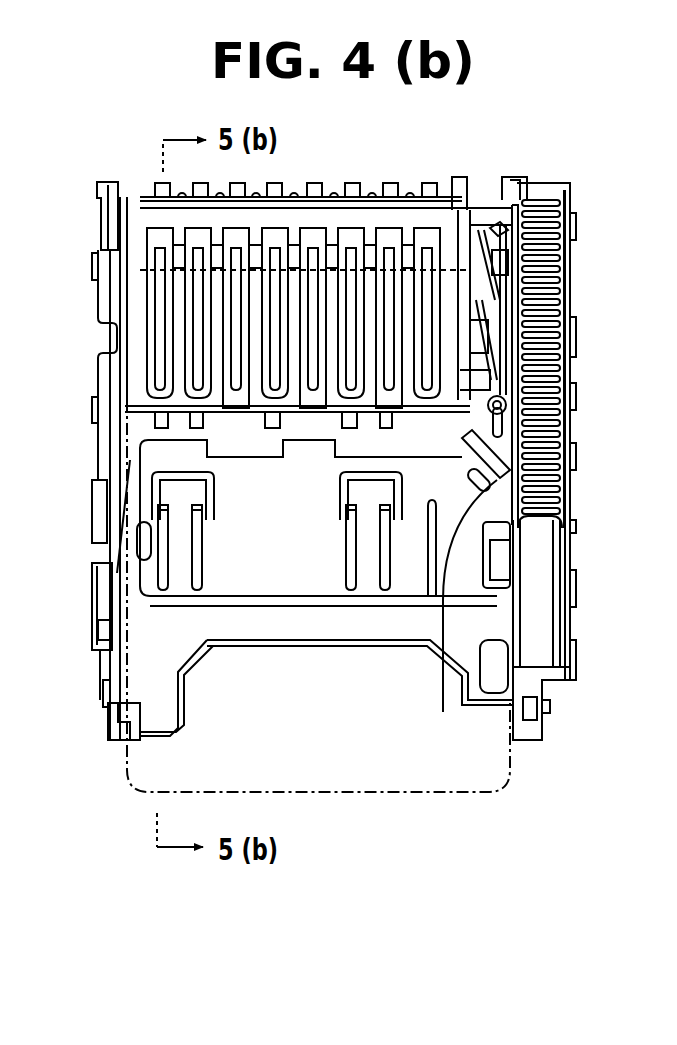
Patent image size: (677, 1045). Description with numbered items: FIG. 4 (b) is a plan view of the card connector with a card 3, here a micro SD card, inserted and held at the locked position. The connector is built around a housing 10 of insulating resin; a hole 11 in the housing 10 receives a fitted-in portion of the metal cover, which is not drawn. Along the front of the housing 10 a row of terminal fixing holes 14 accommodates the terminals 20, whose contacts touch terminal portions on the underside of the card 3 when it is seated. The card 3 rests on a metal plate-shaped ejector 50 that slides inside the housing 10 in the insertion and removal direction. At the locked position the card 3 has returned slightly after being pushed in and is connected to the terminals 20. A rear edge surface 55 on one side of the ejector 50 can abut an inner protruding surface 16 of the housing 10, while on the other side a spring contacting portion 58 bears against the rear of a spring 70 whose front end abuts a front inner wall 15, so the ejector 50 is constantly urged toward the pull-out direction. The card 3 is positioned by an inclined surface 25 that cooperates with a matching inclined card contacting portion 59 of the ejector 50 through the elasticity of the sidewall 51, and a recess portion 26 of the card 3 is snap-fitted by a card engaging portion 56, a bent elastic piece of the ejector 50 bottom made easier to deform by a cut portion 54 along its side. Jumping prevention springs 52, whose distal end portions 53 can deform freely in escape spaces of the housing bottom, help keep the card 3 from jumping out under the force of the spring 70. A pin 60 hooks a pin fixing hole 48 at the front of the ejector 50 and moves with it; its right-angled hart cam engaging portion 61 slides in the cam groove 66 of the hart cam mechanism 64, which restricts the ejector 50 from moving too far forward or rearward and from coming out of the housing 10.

The card 3 is at (418, 795).
The housing 10 is at (395, 193).
The hole 11 is at (100, 632).
The terminal fixing holes 14 is at (132, 235).
The front inner wall 15 is at (523, 205).
The inner protruding surface 16 is at (118, 712).
The terminals 20 is at (316, 185).
The inclined surface 25 is at (443, 650).
The recess portion 26 is at (530, 596).
The pin fixing hole 48 is at (513, 408).
The ejector 50 is at (278, 592).
The sidewall 51 is at (105, 545).
The jumping prevention springs 52 is at (185, 550).
The distal end portions 53 is at (193, 500).
The cut portion 54 is at (418, 596).
The rear edge surface 55 is at (118, 592).
The card engaging portion 56 is at (497, 570).
The spring contacting portion 58 is at (532, 530).
The card contacting portion 59 is at (464, 590).
The pin 60 is at (500, 302).
The hart cam engaging portion 61 is at (495, 256).
The hart cam mechanism 64 is at (503, 234).
The cam groove 66 is at (477, 222).
The spring 70 is at (562, 480).